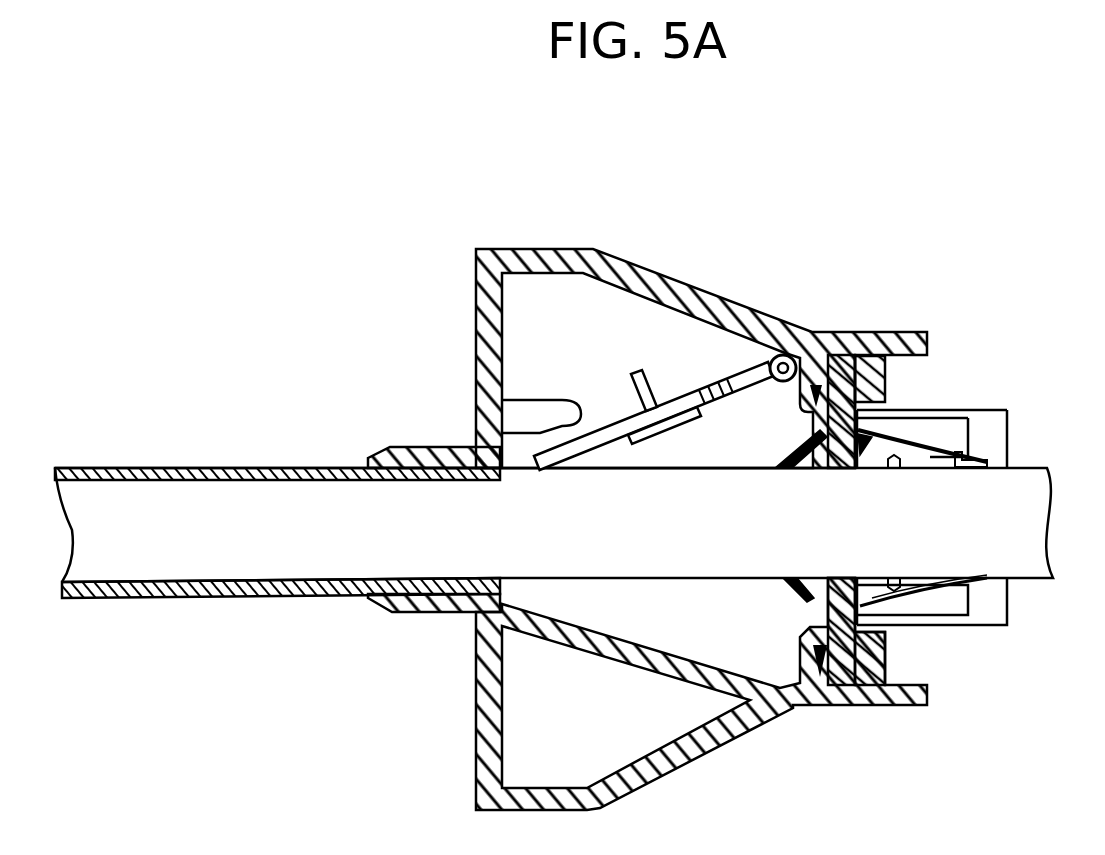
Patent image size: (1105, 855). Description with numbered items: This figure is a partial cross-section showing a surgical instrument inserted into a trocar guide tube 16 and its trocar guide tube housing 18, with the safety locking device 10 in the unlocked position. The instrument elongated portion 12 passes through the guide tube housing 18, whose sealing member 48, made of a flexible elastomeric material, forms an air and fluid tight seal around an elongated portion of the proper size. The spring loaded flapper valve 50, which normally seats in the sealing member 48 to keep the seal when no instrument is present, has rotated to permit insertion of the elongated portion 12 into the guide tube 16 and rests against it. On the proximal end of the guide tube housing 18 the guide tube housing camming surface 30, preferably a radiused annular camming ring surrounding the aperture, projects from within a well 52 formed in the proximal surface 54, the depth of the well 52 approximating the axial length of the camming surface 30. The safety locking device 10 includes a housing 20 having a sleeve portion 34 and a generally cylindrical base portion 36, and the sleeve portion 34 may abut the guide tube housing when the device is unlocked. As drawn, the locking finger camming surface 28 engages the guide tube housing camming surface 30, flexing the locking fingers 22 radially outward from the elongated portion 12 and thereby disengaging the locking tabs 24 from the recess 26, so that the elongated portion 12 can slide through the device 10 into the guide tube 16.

The safety locking device 10 is at (985, 652).
The instrument elongated portion 12 is at (575, 505).
The trocar guide tube 16 is at (277, 548).
The trocar guide tube housing 18 is at (701, 528).
The housing 20 is at (951, 496).
The locking fingers 22 is at (983, 478).
The locking tabs 24 is at (915, 488).
The recess 26 is at (878, 533).
The locking finger camming surface 28 is at (922, 515).
The guide tube housing camming surface 30 is at (841, 478).
The sleeve portion 34 is at (932, 383).
The base portion 36 is at (1010, 430).
The sealing member 48 is at (768, 515).
The flapper valve 50 is at (649, 403).
The well 52 is at (912, 658).
The proximal surface 54 is at (904, 379).